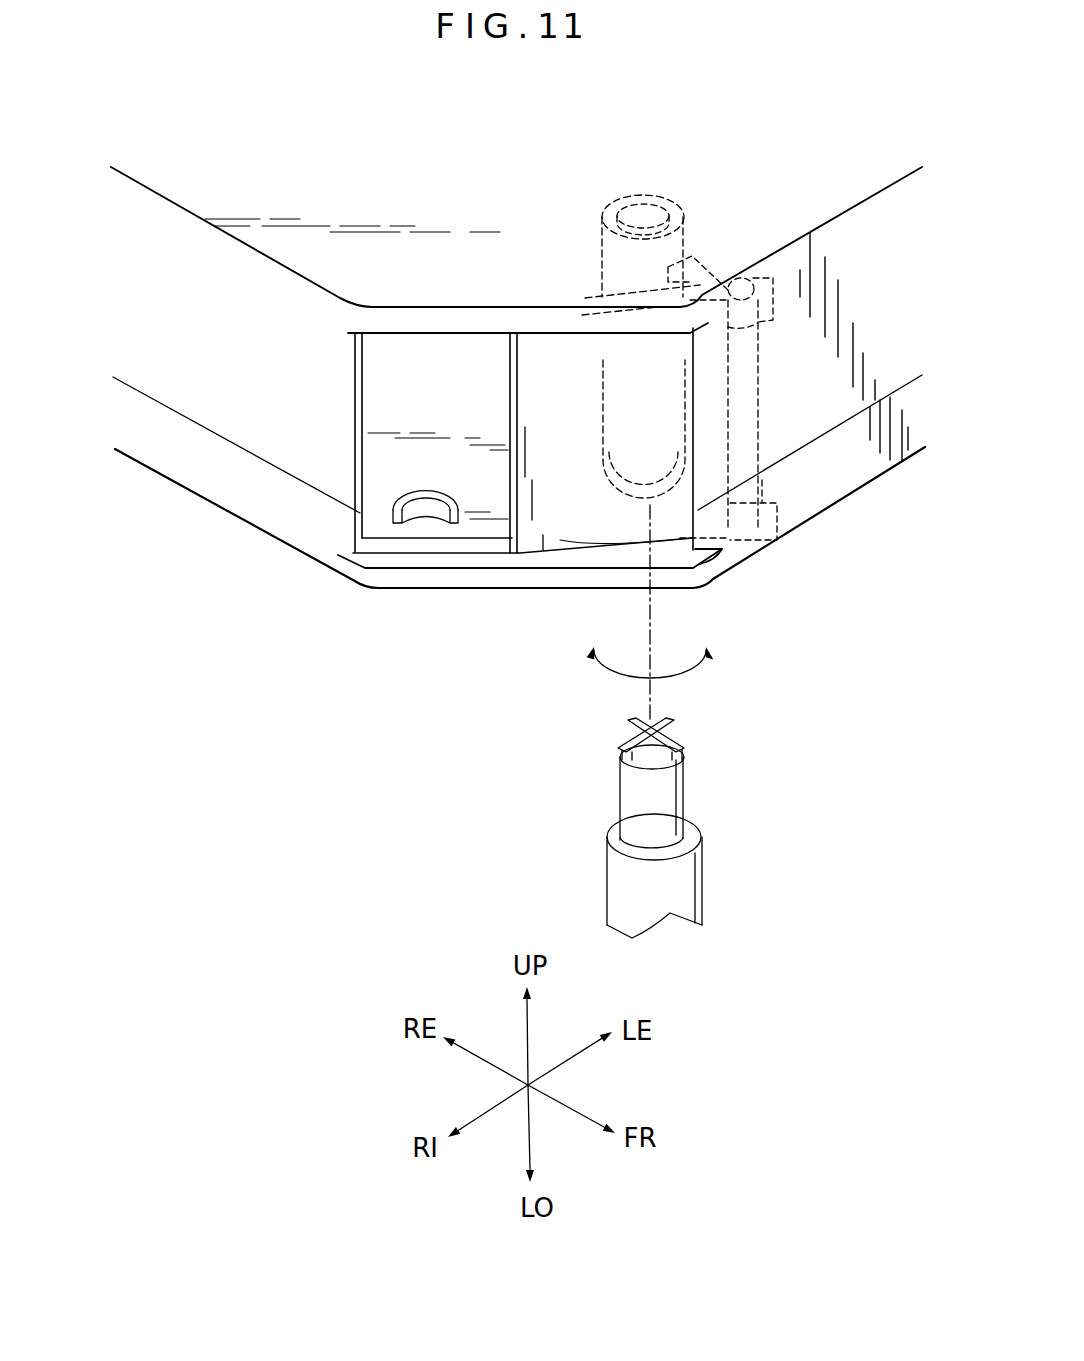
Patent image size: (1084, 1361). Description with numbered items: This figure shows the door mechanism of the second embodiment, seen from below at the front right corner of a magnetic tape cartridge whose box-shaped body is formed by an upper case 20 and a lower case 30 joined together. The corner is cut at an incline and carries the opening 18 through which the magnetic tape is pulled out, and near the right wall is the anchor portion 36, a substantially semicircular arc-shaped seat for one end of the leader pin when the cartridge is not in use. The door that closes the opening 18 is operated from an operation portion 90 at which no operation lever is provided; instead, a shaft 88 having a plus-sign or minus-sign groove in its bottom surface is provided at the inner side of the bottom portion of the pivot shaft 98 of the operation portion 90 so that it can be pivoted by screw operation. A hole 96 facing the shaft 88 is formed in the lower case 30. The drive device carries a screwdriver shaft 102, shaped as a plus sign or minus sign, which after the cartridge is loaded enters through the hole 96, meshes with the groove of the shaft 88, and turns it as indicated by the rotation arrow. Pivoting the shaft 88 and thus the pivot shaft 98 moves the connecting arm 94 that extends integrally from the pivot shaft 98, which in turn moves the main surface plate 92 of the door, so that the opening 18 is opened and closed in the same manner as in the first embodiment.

The opening 18 is at (383, 457).
The upper case 20 is at (837, 213).
The lower case 30 is at (812, 518).
The anchor portion 36 is at (428, 513).
The shaft 88 is at (640, 213).
The operation portion 90 is at (602, 257).
The main surface plate 92 is at (560, 530).
The connecting arm 94 is at (713, 267).
The hole 96 is at (697, 560).
The pivot shaft 98 is at (668, 267).
The screwdriver shaft 102 is at (703, 860).